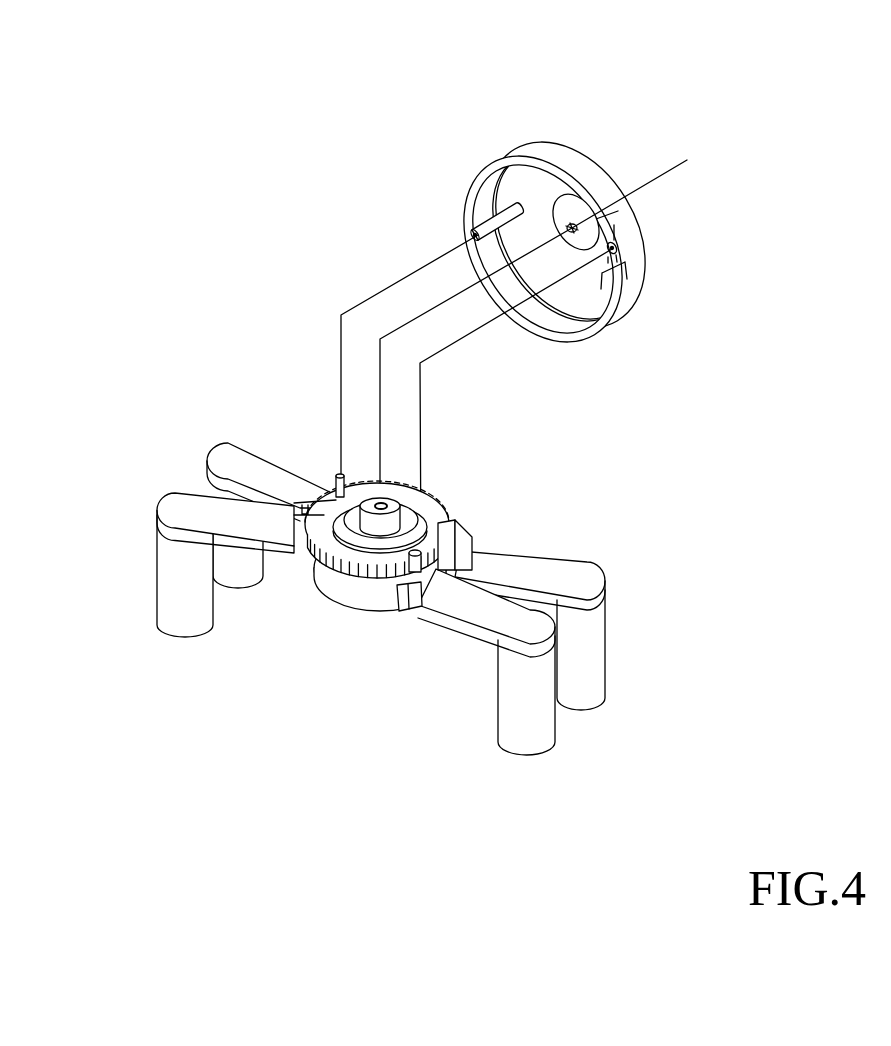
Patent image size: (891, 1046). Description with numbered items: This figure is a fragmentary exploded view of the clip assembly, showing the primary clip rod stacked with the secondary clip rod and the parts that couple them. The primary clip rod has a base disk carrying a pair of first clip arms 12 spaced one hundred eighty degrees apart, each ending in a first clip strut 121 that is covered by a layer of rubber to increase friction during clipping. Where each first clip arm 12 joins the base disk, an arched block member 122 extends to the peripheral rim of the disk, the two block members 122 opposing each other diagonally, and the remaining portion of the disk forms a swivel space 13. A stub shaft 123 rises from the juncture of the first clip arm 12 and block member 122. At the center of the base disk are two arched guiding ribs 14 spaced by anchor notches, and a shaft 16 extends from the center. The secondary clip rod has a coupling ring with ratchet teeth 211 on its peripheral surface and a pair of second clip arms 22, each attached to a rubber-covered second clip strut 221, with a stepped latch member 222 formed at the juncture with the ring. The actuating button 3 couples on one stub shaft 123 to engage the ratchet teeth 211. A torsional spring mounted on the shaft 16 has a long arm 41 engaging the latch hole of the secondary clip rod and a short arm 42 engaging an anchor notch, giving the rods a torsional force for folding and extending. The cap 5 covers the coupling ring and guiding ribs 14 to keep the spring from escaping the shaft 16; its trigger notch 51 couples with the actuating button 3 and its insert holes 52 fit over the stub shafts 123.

The cap 5 is at (555, 160).
The trigger notch 51 is at (616, 255).
The insert holes 52 is at (472, 234).
The shaft 16 is at (378, 516).
The short arm 42 is at (408, 503).
The guiding ribs 14 is at (423, 500).
The stub shaft 123 is at (447, 523).
The long arm 41 is at (296, 504).
The stepped latch member 222 is at (478, 543).
The second clip arms 22 is at (520, 568).
The ratchet teeth 211 is at (345, 572).
The swivel space 13 is at (327, 590).
The arched block member 122 is at (378, 590).
The actuating button 3 is at (420, 582).
The first clip arms 12 is at (495, 608).
The second clip strut 221 is at (590, 652).
The first clip strut 121 is at (533, 702).